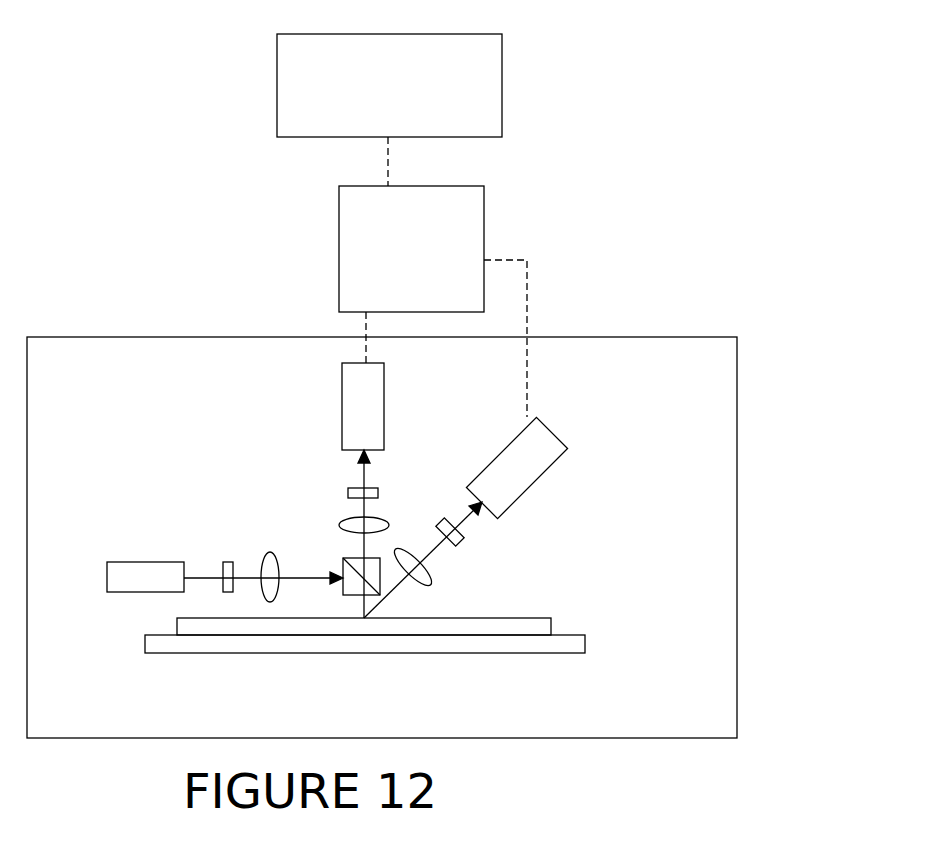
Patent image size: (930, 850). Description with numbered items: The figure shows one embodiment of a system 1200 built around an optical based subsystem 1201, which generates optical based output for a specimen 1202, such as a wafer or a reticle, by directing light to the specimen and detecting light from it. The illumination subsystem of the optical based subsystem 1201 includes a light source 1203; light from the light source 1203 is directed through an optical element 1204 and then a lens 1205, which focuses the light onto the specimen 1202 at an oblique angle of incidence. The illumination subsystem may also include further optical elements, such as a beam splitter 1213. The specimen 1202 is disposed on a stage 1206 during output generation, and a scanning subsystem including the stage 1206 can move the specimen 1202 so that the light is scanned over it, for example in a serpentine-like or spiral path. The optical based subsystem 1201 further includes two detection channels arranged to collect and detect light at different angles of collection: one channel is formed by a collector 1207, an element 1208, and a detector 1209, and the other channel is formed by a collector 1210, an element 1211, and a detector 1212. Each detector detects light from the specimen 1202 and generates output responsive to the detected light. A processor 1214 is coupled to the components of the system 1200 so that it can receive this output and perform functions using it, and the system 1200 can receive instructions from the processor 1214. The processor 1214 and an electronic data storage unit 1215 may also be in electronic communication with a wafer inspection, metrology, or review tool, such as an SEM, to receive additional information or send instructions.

The system 1200 is at (163, 99).
The optical based subsystem 1201 is at (737, 358).
The specimen 1202 is at (177, 618).
The light source 1203 is at (117, 562).
The optical element 1204 is at (229, 562).
The lens 1205 is at (271, 552).
The stage 1206 is at (144, 647).
The collector 1207 is at (345, 520).
The element 1208 is at (348, 490).
The detector 1209 is at (342, 410).
The collector 1210 is at (433, 580).
The element 1211 is at (463, 547).
The detector 1212 is at (551, 468).
The beam splitter 1213 is at (353, 558).
The processor 1214 is at (434, 261).
The electronic data storage unit 1215 is at (412, 96).